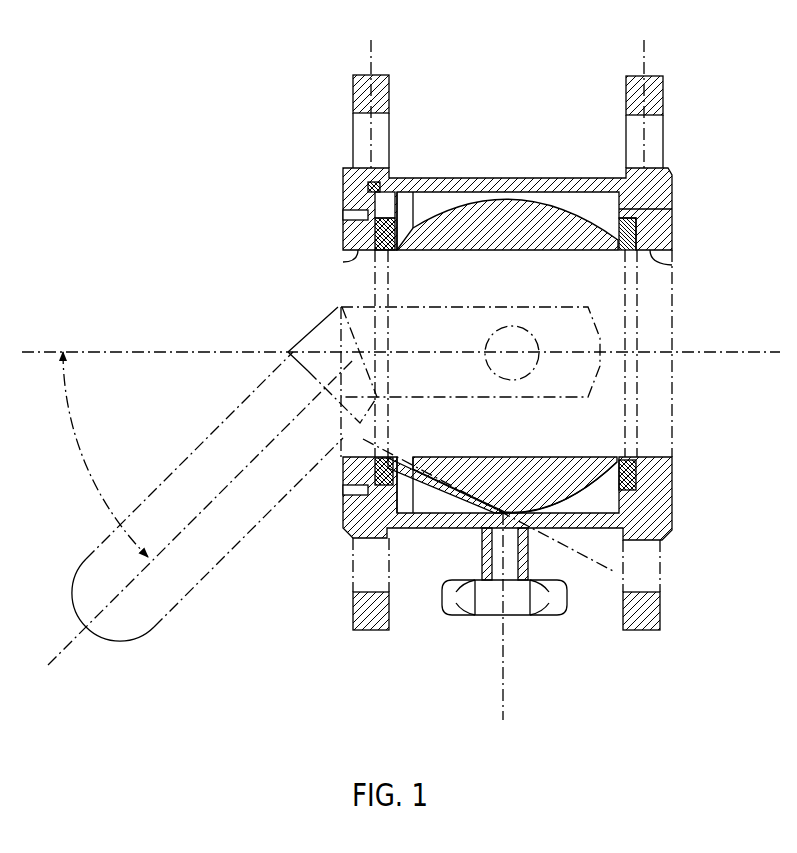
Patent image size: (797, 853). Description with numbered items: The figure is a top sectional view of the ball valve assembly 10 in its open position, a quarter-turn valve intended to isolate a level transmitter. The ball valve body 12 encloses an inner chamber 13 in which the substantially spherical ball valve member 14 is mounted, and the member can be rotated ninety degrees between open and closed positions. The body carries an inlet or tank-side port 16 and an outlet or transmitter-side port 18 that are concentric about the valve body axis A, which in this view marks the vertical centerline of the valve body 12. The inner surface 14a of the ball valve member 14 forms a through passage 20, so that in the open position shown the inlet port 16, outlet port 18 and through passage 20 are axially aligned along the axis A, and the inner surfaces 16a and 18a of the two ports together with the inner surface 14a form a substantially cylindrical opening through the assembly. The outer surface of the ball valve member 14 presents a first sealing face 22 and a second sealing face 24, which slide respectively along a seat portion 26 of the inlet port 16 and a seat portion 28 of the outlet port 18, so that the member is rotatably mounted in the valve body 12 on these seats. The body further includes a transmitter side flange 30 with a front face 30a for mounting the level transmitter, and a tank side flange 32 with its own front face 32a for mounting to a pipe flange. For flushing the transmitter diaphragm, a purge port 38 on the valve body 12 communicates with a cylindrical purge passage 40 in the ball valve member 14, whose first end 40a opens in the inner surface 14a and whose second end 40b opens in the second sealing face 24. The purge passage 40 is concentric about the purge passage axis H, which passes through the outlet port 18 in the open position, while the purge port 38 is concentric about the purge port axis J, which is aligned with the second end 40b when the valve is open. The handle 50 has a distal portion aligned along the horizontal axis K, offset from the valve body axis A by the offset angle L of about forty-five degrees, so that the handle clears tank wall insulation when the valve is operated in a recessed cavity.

The ball valve assembly 10 is at (288, 78).
The ball valve body 12 is at (343, 200).
The inner chamber 13 is at (620, 208).
The ball valve member 14 is at (445, 205).
The inner surface 14a is at (635, 460).
The inlet port 16 is at (672, 280).
The inner surface 16a is at (672, 265).
The outlet port 18 is at (343, 278).
The inner surface 18a is at (345, 262).
The through passage 20 is at (510, 268).
The first sealing face 22 is at (576, 215).
The second sealing face 24 is at (430, 530).
The seat portion 26 is at (636, 237).
The seat portion 28 is at (347, 238).
The transmitter side flange 30 is at (375, 72).
The front face 30a is at (353, 612).
The tank side flange 32 is at (642, 75).
The front face 32a is at (662, 610).
The purge port 38 is at (492, 560).
The purge passage 40 is at (502, 460).
The first end 40a is at (402, 462).
The second end 40b is at (512, 495).
The handle 50 is at (200, 606).
The valve body axis A is at (142, 350).
The horizontal axis of upper flat portion K is at (70, 652).
The offset angle L is at (105, 454).
The purge passage axis H is at (593, 563).
The purge port axis J is at (507, 677).